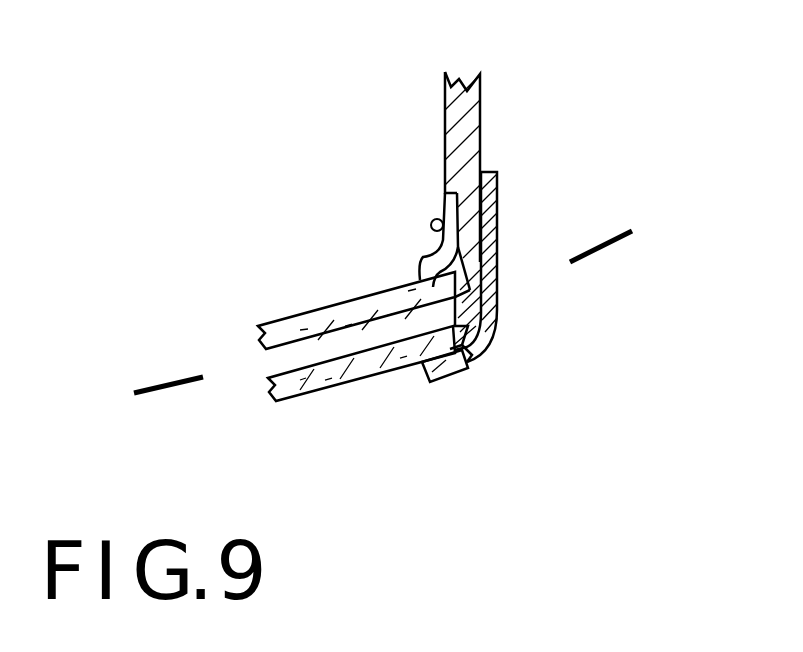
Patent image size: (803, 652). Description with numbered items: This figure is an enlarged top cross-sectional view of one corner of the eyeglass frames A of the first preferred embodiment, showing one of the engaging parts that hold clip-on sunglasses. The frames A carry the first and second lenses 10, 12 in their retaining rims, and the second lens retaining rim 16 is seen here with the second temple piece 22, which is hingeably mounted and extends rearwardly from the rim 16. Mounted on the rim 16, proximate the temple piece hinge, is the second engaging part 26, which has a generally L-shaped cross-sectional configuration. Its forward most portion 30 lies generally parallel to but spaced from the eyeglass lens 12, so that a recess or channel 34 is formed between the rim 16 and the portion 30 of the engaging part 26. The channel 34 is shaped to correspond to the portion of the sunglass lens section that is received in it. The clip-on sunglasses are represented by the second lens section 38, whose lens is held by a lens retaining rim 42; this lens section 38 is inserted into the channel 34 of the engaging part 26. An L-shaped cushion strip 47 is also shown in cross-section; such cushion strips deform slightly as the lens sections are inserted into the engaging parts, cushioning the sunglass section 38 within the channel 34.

The first lens 10 is at (171, 360).
The second lens 12 is at (330, 315).
The second lens retaining rim 16 is at (497, 265).
The second temple piece 22 is at (450, 76).
The second engaging part 26 is at (500, 327).
The forward most portion 30 is at (445, 378).
The channel 34 is at (497, 308).
The second lens section 38 is at (312, 395).
The lens retaining rim 42 is at (478, 350).
The cushion strip 47 is at (370, 297).
The frames A is at (440, 130).